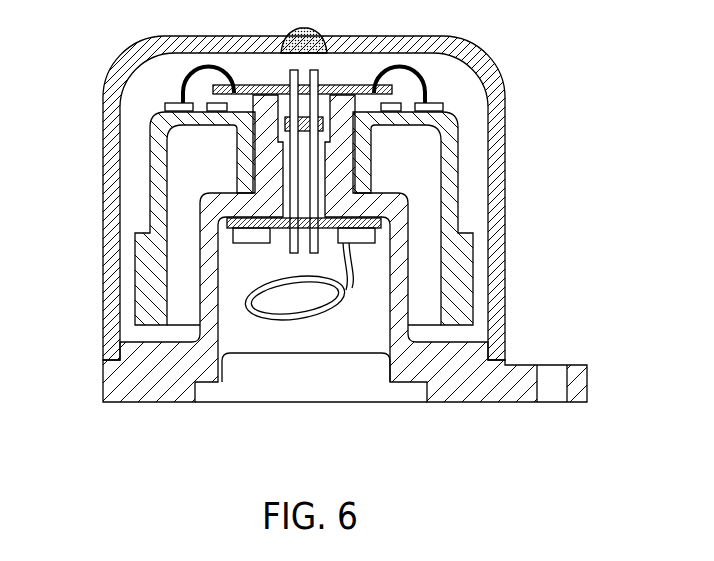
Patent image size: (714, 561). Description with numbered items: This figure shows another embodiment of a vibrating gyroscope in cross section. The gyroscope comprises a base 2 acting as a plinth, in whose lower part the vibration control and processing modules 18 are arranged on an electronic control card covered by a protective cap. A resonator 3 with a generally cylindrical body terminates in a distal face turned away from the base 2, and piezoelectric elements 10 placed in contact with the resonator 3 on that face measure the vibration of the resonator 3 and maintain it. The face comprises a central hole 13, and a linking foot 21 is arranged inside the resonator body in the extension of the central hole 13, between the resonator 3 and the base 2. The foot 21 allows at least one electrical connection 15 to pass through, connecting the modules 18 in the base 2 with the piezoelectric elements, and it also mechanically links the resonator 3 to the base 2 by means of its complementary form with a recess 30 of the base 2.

The base 2 is at (517, 363).
The resonator 3 is at (456, 213).
The piezoelectric elements 10 is at (432, 92).
The central hole 13 is at (260, 110).
The electrical connection 15 is at (289, 173).
The vibration control and processing modules 18 is at (248, 241).
The linking foot 21 is at (456, 213).
The recess 30 is at (355, 183).